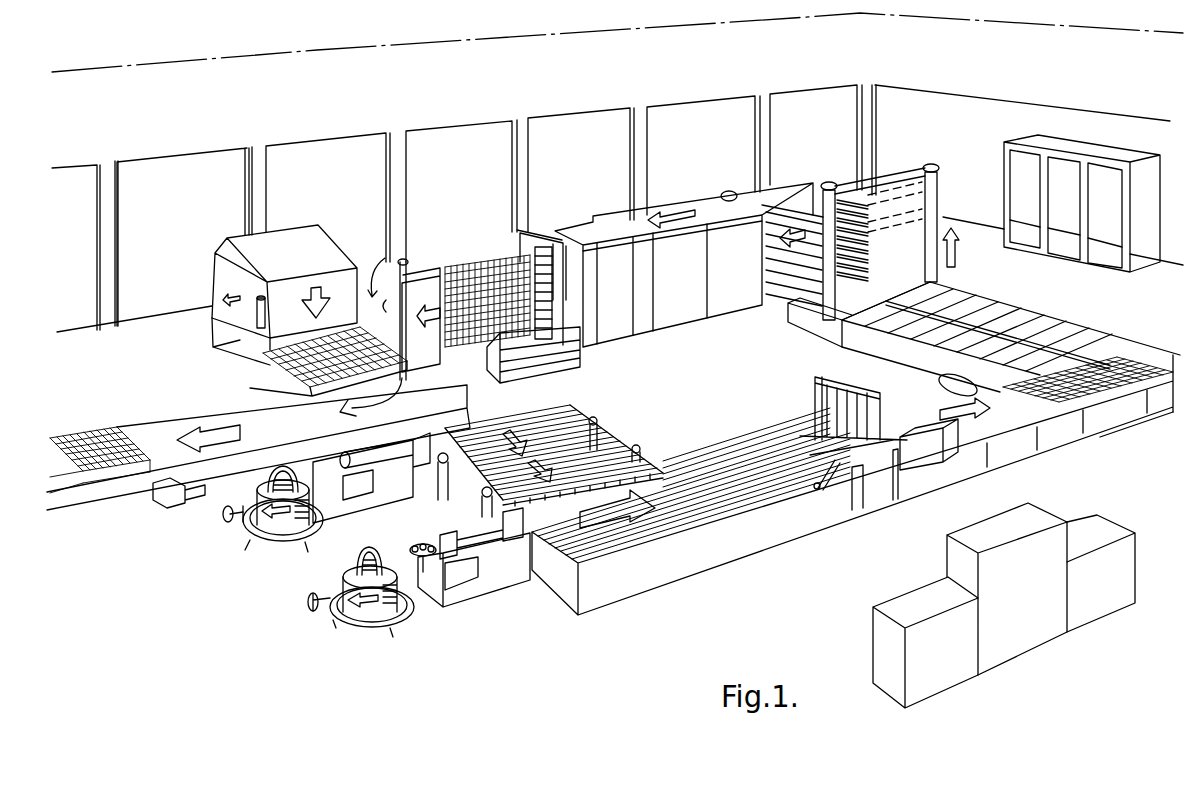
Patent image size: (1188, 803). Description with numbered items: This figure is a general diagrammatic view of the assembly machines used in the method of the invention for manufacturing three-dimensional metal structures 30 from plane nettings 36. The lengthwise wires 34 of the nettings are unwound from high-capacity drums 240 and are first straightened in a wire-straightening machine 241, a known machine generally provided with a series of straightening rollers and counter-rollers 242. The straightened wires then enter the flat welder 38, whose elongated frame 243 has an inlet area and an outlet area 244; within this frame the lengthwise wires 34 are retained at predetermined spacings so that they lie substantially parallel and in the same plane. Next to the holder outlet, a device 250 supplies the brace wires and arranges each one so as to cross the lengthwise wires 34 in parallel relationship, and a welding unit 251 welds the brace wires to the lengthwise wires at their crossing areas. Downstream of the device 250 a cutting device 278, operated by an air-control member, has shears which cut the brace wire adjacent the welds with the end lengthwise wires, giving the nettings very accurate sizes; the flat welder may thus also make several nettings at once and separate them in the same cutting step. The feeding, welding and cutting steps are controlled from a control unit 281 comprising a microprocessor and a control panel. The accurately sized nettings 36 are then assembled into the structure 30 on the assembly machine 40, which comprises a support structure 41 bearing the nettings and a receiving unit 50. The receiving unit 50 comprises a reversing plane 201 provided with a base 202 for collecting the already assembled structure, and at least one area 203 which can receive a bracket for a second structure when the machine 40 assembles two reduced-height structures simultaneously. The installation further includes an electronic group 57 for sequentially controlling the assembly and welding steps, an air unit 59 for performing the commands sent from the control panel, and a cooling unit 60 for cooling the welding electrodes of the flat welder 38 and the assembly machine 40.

The three-dimensional metal structure 30 is at (499, 262).
The lengthwise wires 34 is at (700, 483).
The plane nettings 36 is at (1123, 392).
The flat welder 38 is at (758, 434).
The assembly machine 40 is at (681, 345).
The support structure 41 is at (752, 166).
The receiving unit 50 is at (457, 256).
The electronic group 57 is at (1013, 168).
The air unit 59 is at (1110, 522).
The cooling unit 60 is at (873, 637).
The reversing plane 201 is at (418, 265).
The base 202 is at (440, 363).
The area 203 is at (410, 370).
The drums 240 is at (403, 620).
The wire-straightening machine 241 is at (484, 609).
The straightening rollers and counter-rollers 242 is at (413, 548).
The elongated frame 243 is at (648, 598).
The outlet area 244 is at (1076, 474).
The brace wire supplying device 250 is at (767, 553).
The welding unit 251 is at (860, 475).
The cutting device 278 is at (928, 455).
The control unit 281 is at (943, 561).